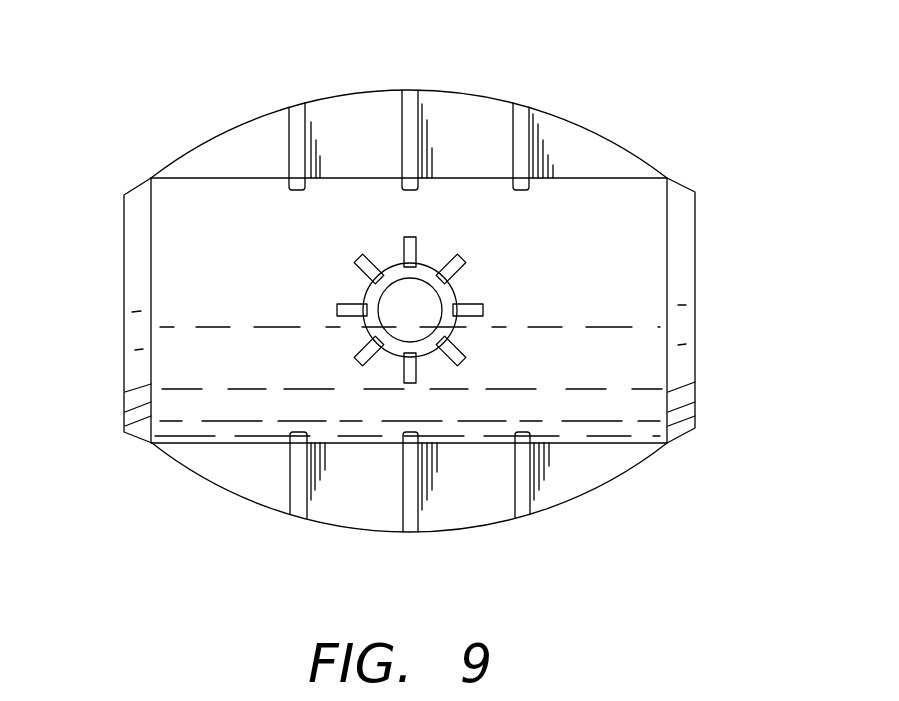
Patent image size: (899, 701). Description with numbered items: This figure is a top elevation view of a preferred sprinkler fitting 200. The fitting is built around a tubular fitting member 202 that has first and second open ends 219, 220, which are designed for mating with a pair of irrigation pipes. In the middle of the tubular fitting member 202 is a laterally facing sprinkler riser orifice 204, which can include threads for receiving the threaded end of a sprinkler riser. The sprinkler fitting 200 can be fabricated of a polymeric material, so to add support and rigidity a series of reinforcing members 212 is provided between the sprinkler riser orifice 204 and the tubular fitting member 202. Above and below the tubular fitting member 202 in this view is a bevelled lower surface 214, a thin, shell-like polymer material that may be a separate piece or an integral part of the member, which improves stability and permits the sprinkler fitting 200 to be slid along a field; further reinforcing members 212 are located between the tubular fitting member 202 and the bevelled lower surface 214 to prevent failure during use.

The sprinkler fitting 200 is at (786, 350).
The tubular fitting member 202 is at (631, 214).
The sprinkler riser orifice 204 is at (433, 318).
The reinforcing members 212 is at (412, 100).
The bevelled lower surface 214 is at (600, 135).
The first open end 219 is at (696, 272).
The second open end 220 is at (124, 272).